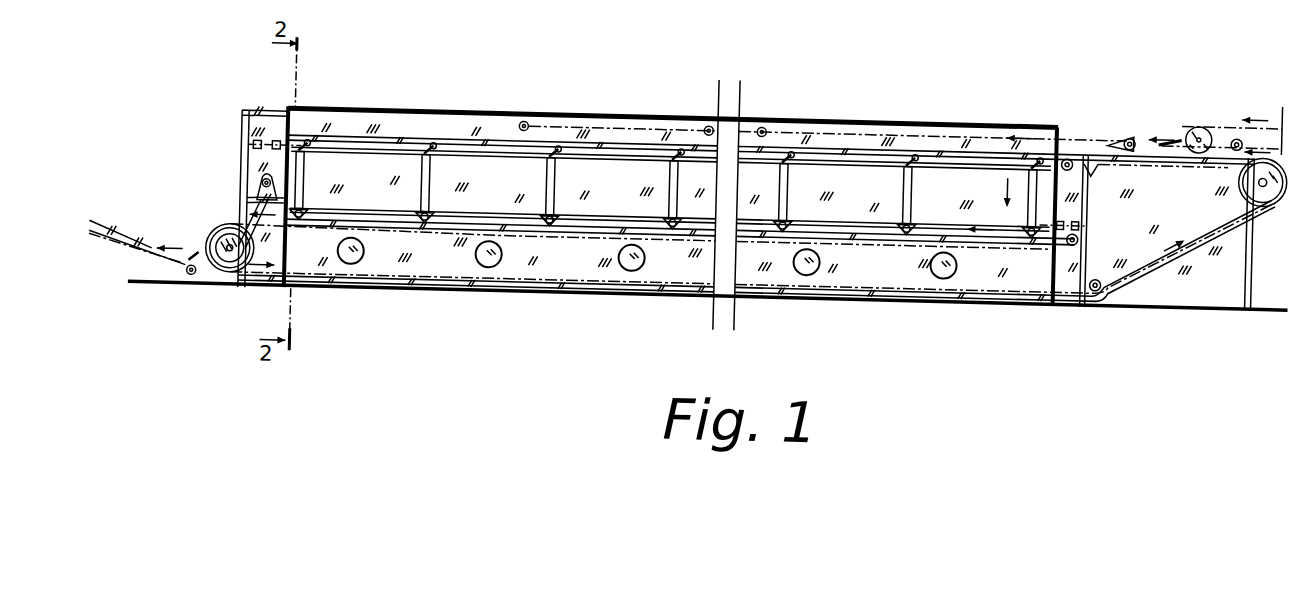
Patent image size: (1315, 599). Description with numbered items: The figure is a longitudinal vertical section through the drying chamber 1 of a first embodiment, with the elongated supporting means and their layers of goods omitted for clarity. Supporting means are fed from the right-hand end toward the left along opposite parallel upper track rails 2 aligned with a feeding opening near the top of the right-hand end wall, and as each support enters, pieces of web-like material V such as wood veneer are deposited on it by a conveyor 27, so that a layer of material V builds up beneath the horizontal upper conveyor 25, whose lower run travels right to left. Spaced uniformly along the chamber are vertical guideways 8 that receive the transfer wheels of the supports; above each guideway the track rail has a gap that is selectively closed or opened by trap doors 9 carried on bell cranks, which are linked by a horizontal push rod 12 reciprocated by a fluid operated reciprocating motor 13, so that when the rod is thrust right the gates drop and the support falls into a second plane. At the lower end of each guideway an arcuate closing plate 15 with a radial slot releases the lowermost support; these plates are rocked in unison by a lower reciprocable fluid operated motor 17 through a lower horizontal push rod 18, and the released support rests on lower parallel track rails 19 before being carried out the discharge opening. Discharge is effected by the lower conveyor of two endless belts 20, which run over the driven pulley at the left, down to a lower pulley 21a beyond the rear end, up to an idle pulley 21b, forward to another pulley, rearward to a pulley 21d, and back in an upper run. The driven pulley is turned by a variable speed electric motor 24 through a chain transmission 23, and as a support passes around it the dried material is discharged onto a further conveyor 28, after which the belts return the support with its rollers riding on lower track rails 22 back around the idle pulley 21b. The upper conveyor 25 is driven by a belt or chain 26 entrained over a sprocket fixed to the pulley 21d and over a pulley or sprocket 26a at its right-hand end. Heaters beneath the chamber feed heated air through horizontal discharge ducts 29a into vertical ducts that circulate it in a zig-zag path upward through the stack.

The drying chamber 1 is at (585, 108).
The upper track rails 2 is at (862, 149).
The vertical guideways 8 is at (668, 194).
The trap doors 9 is at (426, 146).
The horizontal push rod 12 is at (396, 151).
The fluid operated reciprocating motor 13 is at (268, 145).
The closing plate 15 is at (559, 211).
The lower reciprocable fluid operated motor 17 is at (1069, 231).
The lower horizontal push rod 18 is at (471, 212).
The lower parallel track rails 19 is at (858, 224).
The endless belts 20 is at (978, 272).
The lower pulley 21a is at (1080, 223).
The idle pulley 21b is at (1273, 188).
The pulley 21d is at (1088, 150).
The lower track rails 22 is at (515, 285).
The chain transmission 23 is at (287, 230).
The variable speed electric motor 24 is at (263, 182).
The horizontal upper conveyor 25 is at (664, 128).
The belt or chain 26 is at (1111, 121).
The pulley or sprocket 26a is at (1131, 121).
The conveyor 27 is at (1230, 107).
The further conveyor 28 is at (191, 252).
The horizontal discharge duct 29a is at (366, 252).
The web-like material V is at (122, 230).